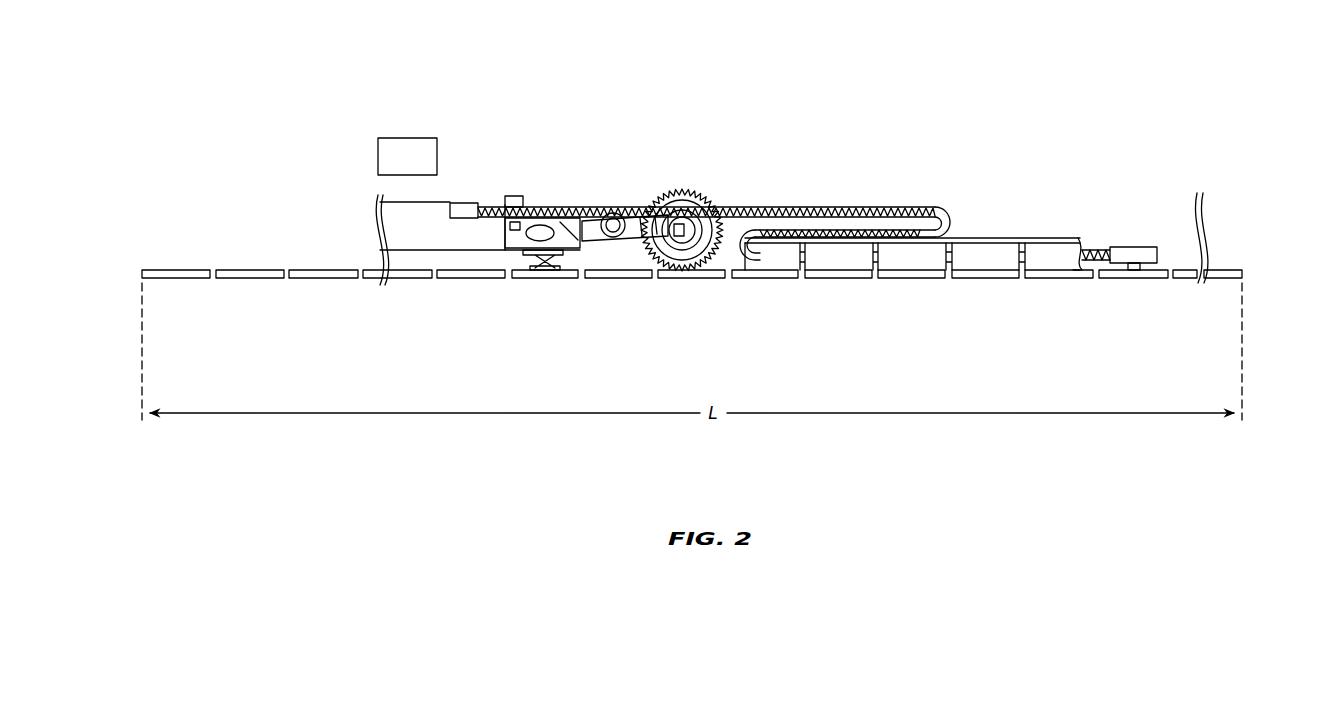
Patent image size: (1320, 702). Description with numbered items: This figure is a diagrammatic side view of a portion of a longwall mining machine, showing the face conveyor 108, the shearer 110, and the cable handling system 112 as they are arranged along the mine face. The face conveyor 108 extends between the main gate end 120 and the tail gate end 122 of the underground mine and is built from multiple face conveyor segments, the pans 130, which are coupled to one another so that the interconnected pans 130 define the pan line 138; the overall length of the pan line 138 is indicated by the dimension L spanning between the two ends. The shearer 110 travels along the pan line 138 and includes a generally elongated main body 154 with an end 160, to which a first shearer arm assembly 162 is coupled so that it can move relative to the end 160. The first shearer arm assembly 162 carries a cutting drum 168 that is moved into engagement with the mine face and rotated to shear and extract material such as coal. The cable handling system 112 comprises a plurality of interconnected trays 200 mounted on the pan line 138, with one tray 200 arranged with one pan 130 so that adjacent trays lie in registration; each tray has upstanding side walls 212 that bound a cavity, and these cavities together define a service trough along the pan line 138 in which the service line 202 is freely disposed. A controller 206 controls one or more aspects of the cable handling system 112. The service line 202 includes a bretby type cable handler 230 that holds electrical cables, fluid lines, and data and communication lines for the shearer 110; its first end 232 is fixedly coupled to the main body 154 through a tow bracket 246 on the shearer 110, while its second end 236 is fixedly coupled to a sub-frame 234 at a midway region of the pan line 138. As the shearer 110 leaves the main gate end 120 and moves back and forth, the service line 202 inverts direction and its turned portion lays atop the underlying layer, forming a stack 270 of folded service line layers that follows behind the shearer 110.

The face conveyor 108 is at (1212, 264).
The shearer 110 is at (574, 206).
The cable handling system 112 is at (926, 204).
The main gate end 120 is at (128, 244).
The tail gate end 122 is at (1272, 168).
The pans 130 is at (395, 278).
The pan line 138 is at (1228, 264).
The main body 154 is at (537, 208).
The end 160 is at (602, 205).
The first shearer arm assembly 162 is at (706, 188).
The cutting drum 168 is at (690, 190).
The interconnected trays 200 is at (975, 237).
The service line 202 is at (852, 204).
The controller 206 is at (420, 137).
The side wall 212 is at (771, 255).
The cable handler 230 is at (804, 227).
The first end 232 is at (492, 206).
The sub-frame 234 is at (1143, 251).
The second end 236 is at (1100, 249).
The tow bracket 246 is at (481, 206).
The stack 270 is at (942, 220).